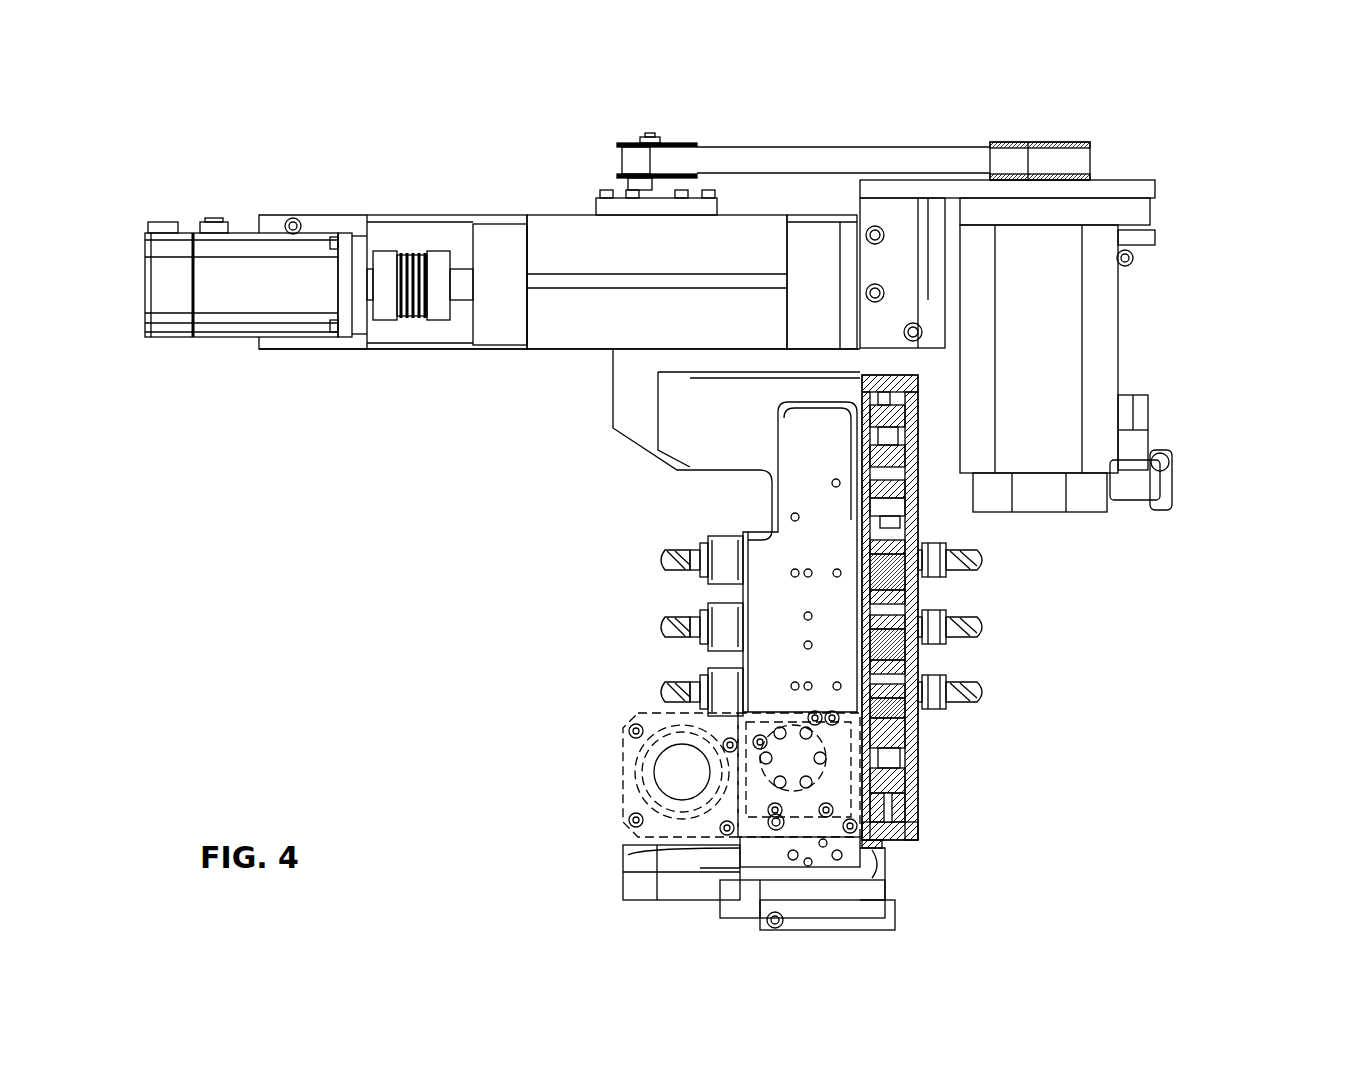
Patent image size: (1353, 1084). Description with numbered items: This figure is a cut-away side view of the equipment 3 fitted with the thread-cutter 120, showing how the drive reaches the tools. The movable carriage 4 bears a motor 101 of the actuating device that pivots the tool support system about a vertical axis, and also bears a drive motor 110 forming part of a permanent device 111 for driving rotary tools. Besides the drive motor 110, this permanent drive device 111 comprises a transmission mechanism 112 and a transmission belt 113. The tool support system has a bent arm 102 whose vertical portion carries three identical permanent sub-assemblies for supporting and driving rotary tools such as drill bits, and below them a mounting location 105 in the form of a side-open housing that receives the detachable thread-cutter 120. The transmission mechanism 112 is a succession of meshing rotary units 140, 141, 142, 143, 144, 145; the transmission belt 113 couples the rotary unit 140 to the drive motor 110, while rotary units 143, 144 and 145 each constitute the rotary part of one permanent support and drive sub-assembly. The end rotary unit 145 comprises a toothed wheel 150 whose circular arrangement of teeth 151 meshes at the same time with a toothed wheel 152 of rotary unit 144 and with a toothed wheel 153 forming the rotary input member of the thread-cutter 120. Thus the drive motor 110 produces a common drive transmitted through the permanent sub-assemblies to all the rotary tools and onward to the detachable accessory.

The equipment 3 is at (1192, 191).
The movable carriage 4 is at (306, 345).
The motor 101 is at (216, 297).
The bent arm 102 is at (650, 427).
The mounting location 105 is at (902, 806).
The drive motor 110 is at (1040, 295).
The permanent device for driving rotary tools 111 is at (1122, 97).
The transmission mechanism 112 is at (678, 132).
The transmission belt 113 is at (740, 168).
The thread-cutter 120 is at (617, 775).
The rotary unit 140 is at (647, 134).
The rotary unit 141 is at (917, 408).
The rotary unit 142 is at (917, 470).
The rotary unit 143 is at (937, 582).
The rotary unit 144 is at (937, 630).
The rotary unit 145 is at (937, 693).
The toothed wheel 150 is at (936, 670).
The circular arrangement of teeth 151 is at (915, 745).
The toothed wheel 152 is at (935, 606).
The toothed wheel 153 is at (912, 777).